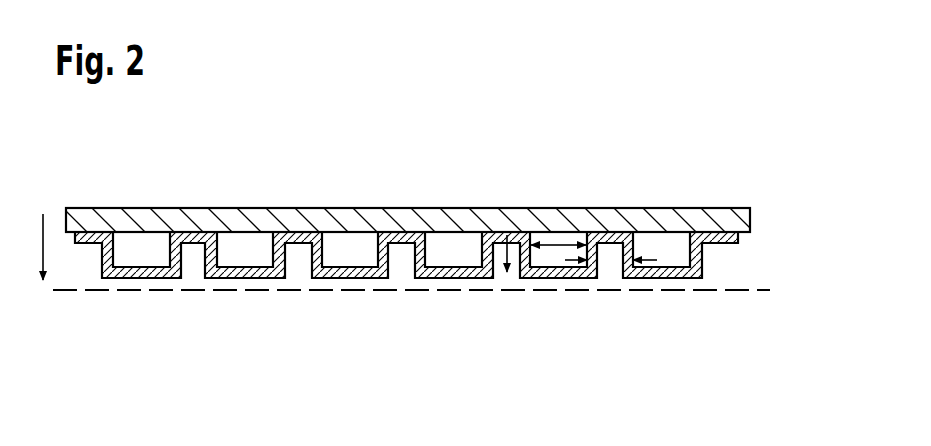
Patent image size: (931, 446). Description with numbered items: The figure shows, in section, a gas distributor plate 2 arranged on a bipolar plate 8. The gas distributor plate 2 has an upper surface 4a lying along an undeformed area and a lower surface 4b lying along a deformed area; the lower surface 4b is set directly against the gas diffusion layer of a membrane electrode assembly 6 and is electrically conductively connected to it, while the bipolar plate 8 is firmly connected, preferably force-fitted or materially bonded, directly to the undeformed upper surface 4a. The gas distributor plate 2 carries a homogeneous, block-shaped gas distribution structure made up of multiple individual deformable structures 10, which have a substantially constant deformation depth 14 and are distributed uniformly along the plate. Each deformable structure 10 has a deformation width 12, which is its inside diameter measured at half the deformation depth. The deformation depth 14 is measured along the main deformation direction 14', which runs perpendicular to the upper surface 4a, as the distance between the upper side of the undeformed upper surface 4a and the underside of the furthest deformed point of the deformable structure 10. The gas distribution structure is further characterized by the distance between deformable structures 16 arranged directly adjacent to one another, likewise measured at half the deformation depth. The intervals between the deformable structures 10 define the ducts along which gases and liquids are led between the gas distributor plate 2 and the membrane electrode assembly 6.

The gas distributor plate 2 is at (716, 258).
The upper surface 4a is at (297, 237).
The lower surface 4b is at (258, 280).
The membrane electrode assembly 6 is at (757, 290).
The bipolar plate 8 is at (719, 218).
The deformable structure 10 is at (493, 278).
The deformation width 12 is at (553, 250).
The deformation depth 14 is at (512, 291).
The main deformation direction 14' is at (66, 208).
The distance between deformable structures 16 is at (608, 262).